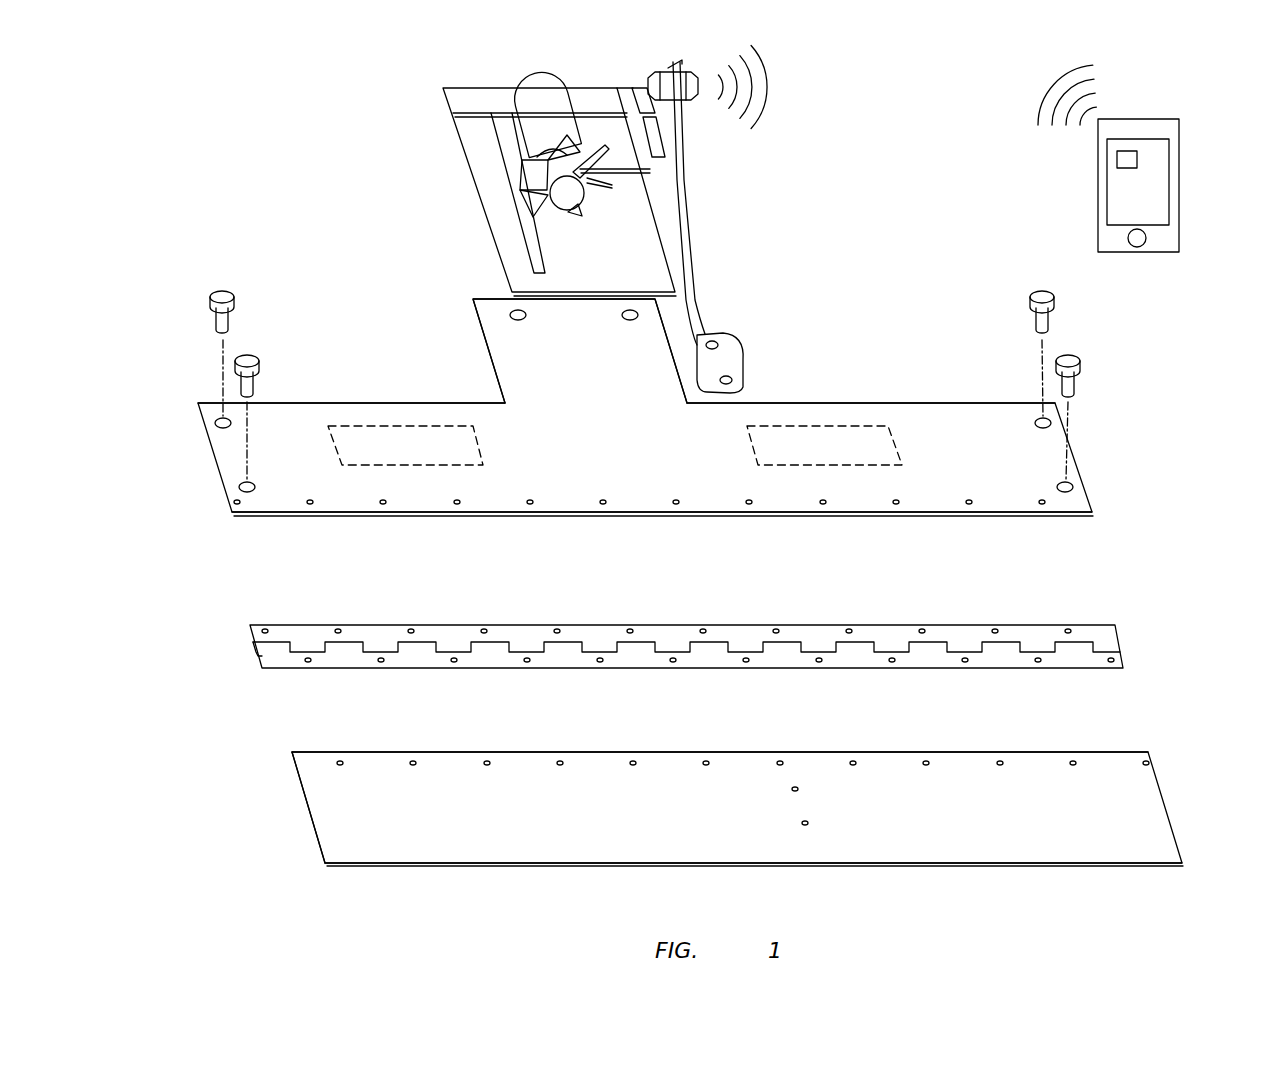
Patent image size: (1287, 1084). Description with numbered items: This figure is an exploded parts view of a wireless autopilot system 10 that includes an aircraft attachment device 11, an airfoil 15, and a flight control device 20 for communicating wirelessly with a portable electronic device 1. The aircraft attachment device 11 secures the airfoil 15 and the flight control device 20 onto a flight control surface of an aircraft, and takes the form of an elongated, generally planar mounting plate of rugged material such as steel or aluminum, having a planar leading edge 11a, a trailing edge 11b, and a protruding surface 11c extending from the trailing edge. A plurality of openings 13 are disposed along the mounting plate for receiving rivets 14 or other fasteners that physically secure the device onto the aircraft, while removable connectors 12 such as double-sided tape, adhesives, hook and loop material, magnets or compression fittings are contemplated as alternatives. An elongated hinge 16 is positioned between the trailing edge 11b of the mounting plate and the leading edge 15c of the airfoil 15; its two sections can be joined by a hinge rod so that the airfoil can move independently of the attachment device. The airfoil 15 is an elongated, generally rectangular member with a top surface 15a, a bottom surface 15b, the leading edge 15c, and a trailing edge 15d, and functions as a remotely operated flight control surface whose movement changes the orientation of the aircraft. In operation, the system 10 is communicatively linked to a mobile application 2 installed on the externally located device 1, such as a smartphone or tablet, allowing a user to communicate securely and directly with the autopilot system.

The portable electronic device 1 is at (1144, 158).
The mobile application 2 is at (1127, 155).
The wireless autopilot system 10 is at (232, 137).
The aircraft attachment device 11 is at (623, 445).
The leading edge 11a is at (399, 402).
The trailing edge 11b is at (913, 513).
The protruding surface 11c is at (490, 322).
The removable connectors 12 is at (348, 433).
The openings 13 is at (630, 313).
The rivets 14 is at (247, 357).
The airfoil 15 is at (772, 830).
The top surface 15a is at (404, 870).
The bottom surface 15b is at (667, 815).
The leading edge 15c is at (617, 751).
The trailing edge 15d is at (830, 865).
The elongated hinge 16 is at (1107, 648).
The flight control device 20 is at (492, 290).